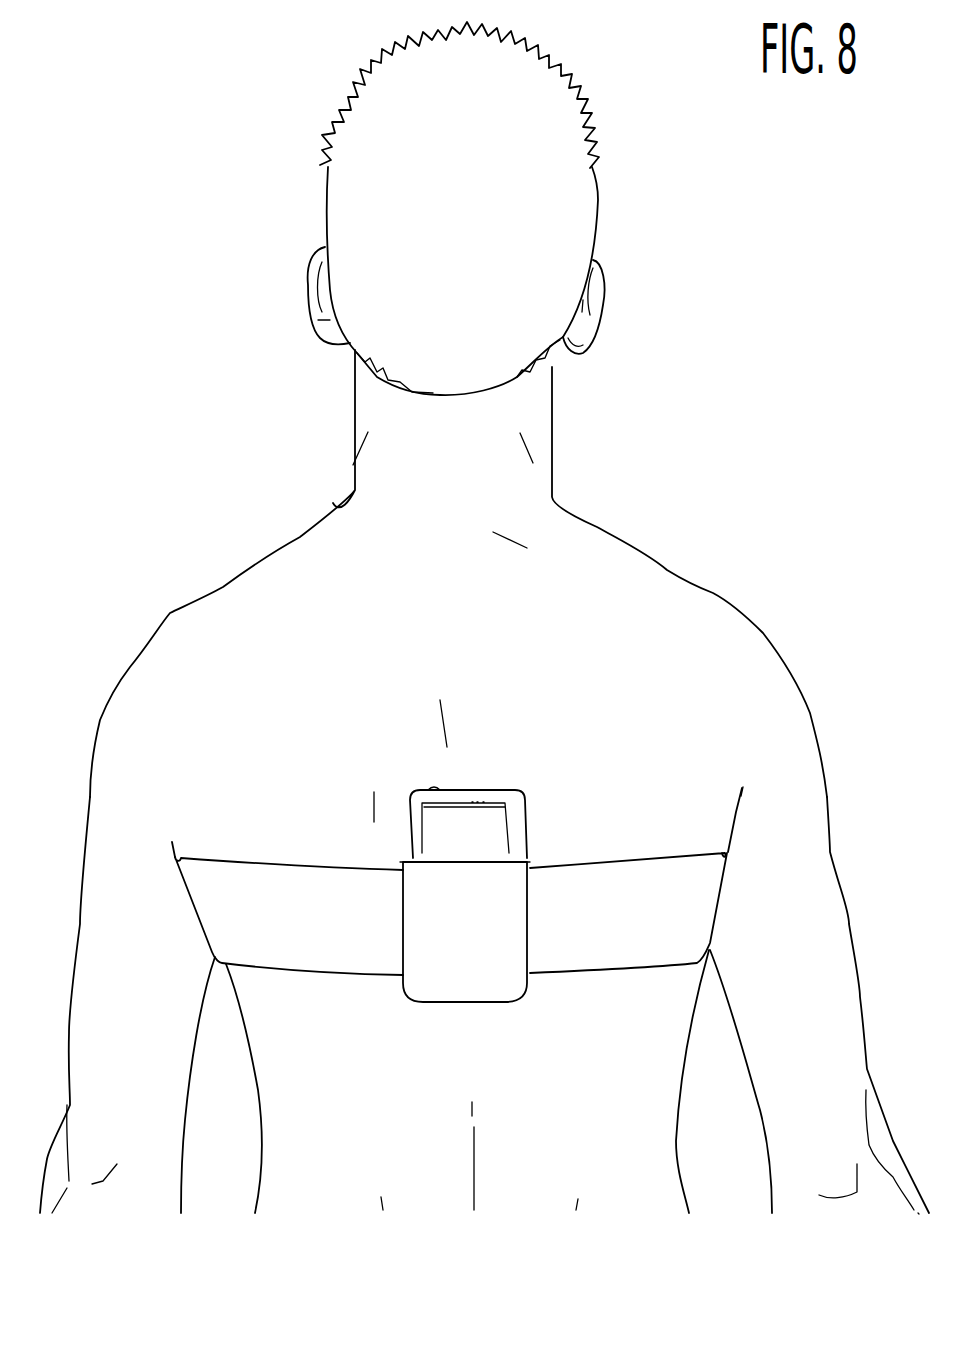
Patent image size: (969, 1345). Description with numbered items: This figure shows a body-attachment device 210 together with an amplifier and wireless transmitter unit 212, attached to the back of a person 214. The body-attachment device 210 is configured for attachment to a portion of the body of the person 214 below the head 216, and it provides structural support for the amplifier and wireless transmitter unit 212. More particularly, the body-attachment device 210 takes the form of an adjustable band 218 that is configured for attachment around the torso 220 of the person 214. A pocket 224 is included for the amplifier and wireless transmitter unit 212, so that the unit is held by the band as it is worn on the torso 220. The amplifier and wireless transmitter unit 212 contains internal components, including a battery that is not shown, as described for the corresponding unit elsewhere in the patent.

The body-attachment device 210 is at (451, 881).
The amplifier and wireless transmitter unit 212 is at (486, 798).
The person 214 is at (662, 612).
The head 216 is at (530, 223).
The adjustable band 218 is at (608, 952).
The torso 220 is at (284, 1029).
The pocket 224 is at (445, 977).